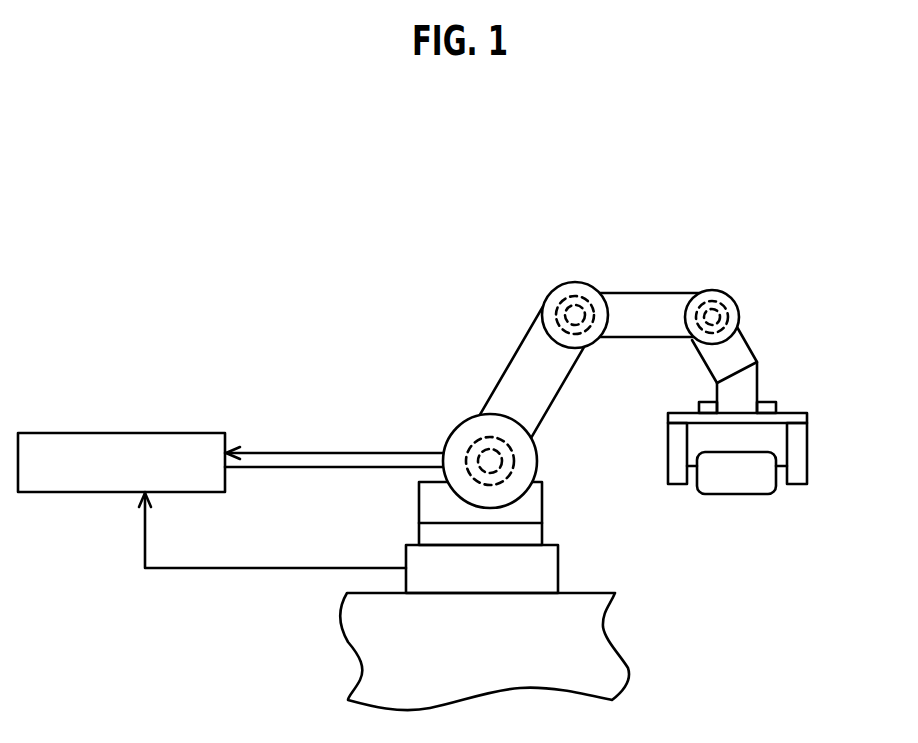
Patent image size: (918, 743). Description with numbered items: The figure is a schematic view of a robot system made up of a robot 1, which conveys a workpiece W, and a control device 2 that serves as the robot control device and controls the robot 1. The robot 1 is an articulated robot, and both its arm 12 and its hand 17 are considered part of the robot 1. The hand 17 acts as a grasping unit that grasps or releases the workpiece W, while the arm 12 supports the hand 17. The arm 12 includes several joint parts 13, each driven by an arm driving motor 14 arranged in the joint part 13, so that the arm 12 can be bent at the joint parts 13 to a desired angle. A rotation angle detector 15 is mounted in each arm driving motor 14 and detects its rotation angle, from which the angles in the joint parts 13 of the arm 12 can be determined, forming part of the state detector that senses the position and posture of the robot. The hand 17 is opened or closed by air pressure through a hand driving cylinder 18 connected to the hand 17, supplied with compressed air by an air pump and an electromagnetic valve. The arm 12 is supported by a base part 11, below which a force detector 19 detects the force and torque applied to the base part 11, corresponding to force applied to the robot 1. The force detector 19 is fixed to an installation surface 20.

The robot 1 is at (660, 310).
The control device 2 is at (110, 433).
The base part 11 is at (533, 538).
The arm 12 is at (518, 378).
The joint part 13 is at (465, 433).
The arm driving motor 14 is at (518, 450).
The rotation angle detector 15 is at (508, 462).
The hand 17 is at (797, 458).
The hand driving cylinder 18 is at (762, 400).
The force detector 19 is at (533, 563).
The installation surface 20 is at (597, 593).
The workpiece W is at (753, 478).